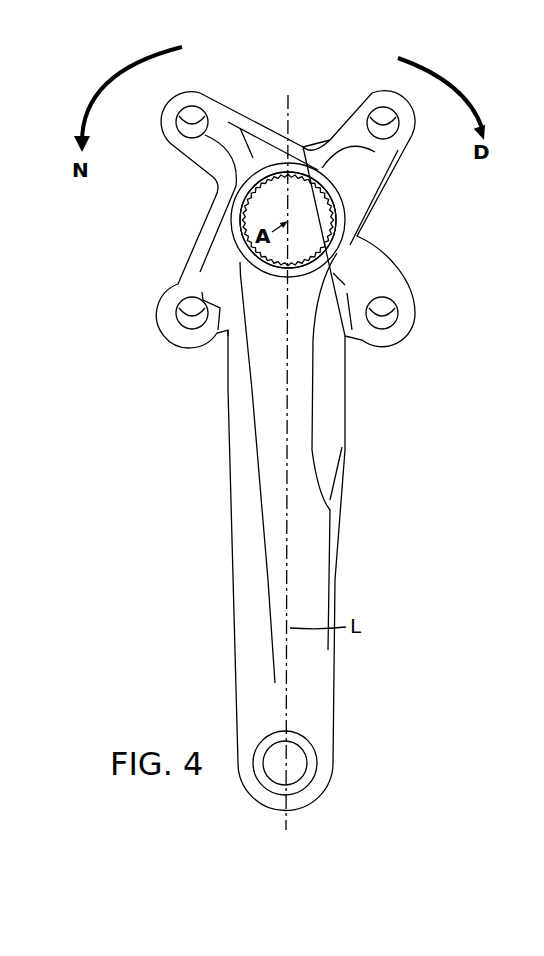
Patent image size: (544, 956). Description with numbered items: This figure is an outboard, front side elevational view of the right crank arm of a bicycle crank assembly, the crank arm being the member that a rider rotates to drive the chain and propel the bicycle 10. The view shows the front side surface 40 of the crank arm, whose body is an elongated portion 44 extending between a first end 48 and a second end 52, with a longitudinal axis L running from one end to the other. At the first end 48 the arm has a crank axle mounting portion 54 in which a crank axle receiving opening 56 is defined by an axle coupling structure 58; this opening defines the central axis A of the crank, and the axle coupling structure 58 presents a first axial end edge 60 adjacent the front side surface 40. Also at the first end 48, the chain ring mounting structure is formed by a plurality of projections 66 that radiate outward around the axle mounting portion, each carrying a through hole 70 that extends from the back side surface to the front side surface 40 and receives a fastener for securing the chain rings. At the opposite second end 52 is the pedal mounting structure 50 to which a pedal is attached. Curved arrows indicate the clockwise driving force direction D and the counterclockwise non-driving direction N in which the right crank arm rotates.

The bicycle 10 is at (240, 128).
The front side surface 40 is at (312, 556).
The elongated portion 44 is at (328, 400).
The first end 48 is at (304, 140).
The pedal mounting structure 50 is at (300, 772).
The second end 52 is at (310, 800).
The crank axle mounting portion 54 is at (352, 200).
The crank axle receiving opening 56 is at (320, 193).
The axle coupling structure 58 is at (248, 183).
The first axial end edge 60 is at (268, 264).
The projections 66 is at (182, 146).
The through holes 70 is at (183, 120).